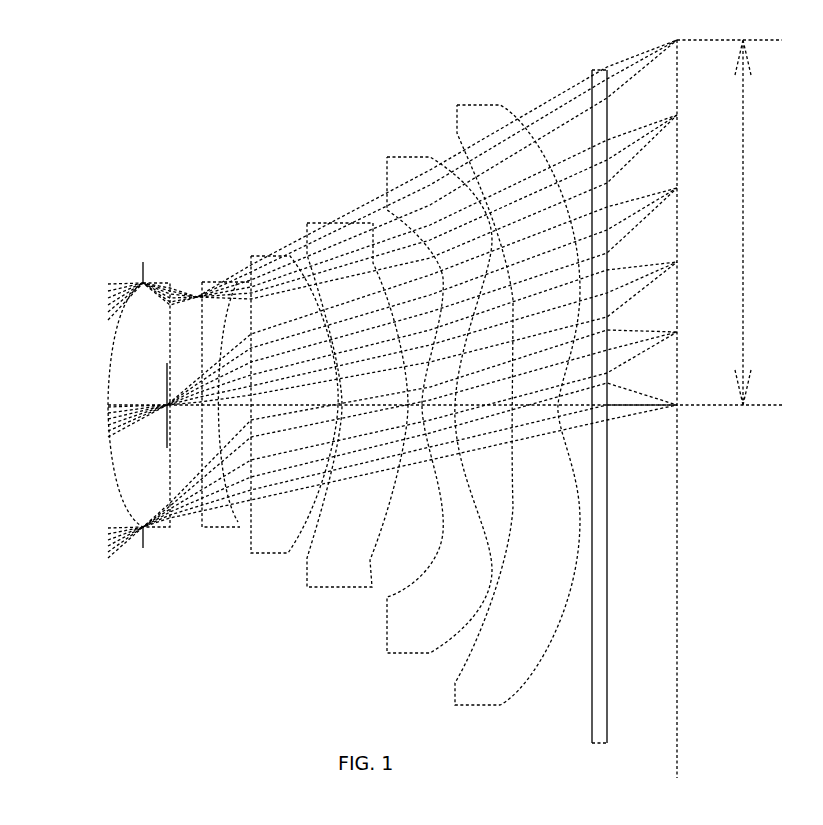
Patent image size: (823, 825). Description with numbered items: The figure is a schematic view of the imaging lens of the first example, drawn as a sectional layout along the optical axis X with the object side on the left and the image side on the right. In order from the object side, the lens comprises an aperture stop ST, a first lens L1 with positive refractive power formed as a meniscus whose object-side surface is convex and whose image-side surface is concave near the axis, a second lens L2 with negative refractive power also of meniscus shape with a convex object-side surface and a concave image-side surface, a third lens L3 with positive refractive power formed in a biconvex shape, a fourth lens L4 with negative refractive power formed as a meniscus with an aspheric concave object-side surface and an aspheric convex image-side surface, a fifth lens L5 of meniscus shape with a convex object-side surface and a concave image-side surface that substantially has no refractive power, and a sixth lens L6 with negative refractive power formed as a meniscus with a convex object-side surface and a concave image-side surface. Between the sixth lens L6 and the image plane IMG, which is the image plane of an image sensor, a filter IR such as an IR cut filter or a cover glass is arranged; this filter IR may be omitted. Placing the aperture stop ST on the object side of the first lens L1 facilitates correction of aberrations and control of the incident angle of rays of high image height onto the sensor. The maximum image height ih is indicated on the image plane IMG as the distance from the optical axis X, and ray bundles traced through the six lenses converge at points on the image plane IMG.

The first lens L1 is at (163, 282).
The second lens L2 is at (217, 282).
The third lens L3 is at (277, 257).
The fourth lens L4 is at (318, 223).
The fifth lens L5 is at (418, 155).
The sixth lens L6 is at (468, 105).
The aperture stop ST is at (143, 272).
The filter IR is at (592, 70).
The image plane IMG is at (677, 752).
The optical axis X is at (122, 403).
The maximum image height ih is at (760, 222).